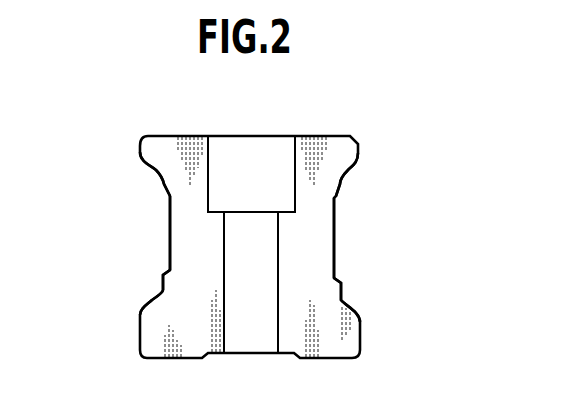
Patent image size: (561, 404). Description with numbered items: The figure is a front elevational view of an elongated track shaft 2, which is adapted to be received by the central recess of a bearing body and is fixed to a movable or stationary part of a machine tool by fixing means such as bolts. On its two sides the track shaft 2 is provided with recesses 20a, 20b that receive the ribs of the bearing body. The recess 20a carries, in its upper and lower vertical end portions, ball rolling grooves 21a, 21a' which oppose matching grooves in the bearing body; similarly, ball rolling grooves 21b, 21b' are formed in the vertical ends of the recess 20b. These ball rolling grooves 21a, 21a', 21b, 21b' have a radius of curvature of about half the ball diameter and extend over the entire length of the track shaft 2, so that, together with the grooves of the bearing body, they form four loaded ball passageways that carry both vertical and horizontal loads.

The track shaft 2 is at (365, 197).
The recess 20a is at (170, 240).
The recess 20b is at (335, 240).
The ball rolling groove 21a is at (127, 163).
The ball rolling groove 21b is at (371, 154).
The ball rolling groove 21a' is at (122, 292).
The ball rolling groove 21b' is at (382, 300).